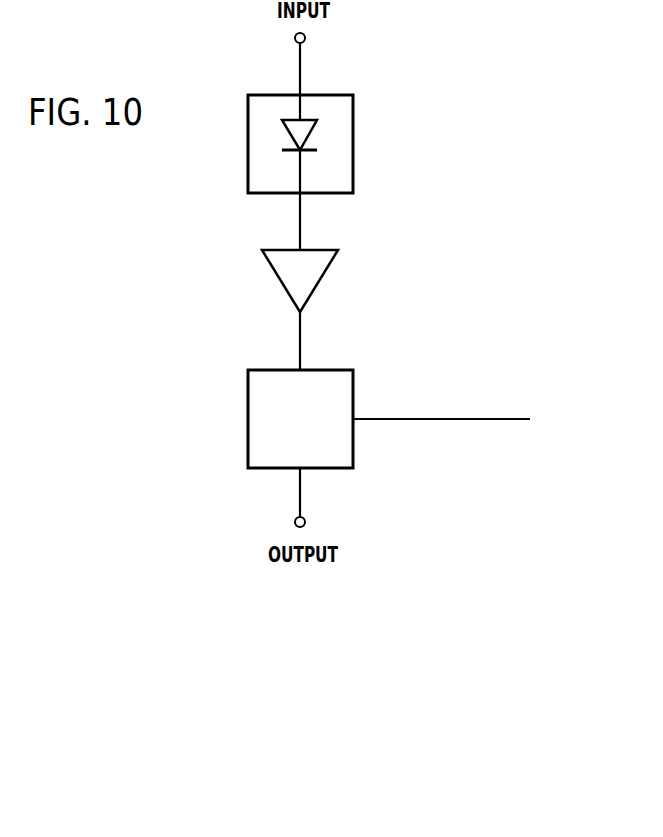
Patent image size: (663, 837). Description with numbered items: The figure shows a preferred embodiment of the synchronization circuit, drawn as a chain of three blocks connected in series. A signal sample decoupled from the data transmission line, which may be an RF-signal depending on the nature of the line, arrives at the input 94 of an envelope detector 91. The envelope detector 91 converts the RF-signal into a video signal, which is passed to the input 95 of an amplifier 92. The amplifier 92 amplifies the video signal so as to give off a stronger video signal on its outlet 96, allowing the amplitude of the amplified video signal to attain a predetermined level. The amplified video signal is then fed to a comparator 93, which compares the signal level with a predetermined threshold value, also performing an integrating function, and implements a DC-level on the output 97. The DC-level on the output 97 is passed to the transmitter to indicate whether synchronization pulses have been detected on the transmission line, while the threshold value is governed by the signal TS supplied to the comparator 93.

The envelope detector 91 is at (260, 128).
The amplifier 92 is at (280, 262).
The comparator 93 is at (263, 408).
The input 94 is at (375, 63).
The input 95 is at (378, 214).
The outlet 96 is at (373, 342).
The output 97 is at (368, 521).